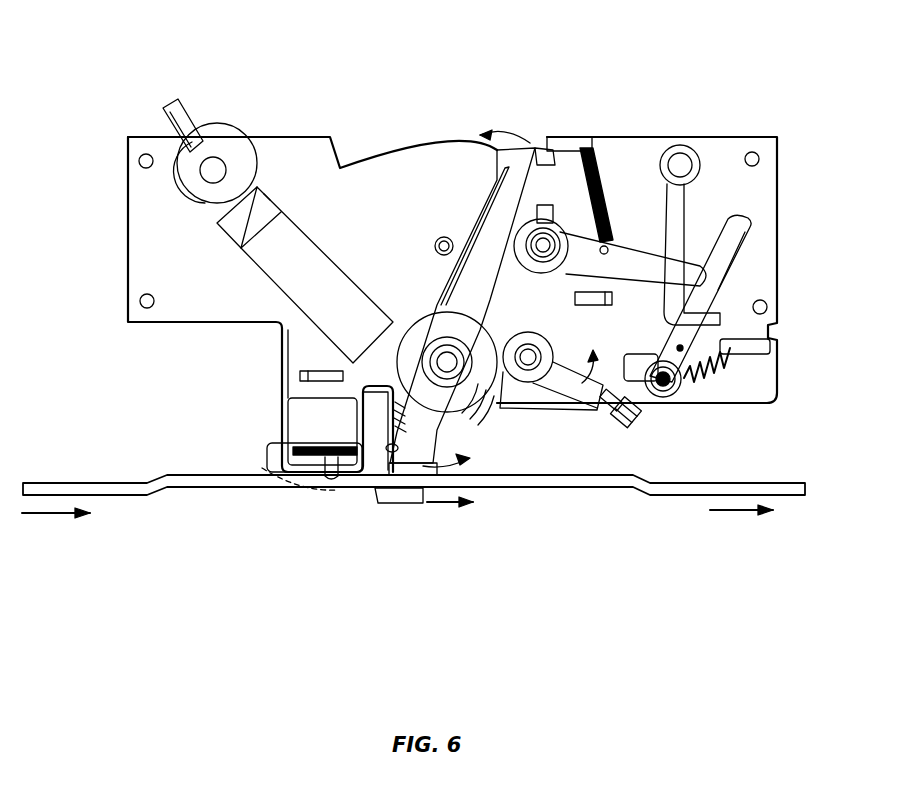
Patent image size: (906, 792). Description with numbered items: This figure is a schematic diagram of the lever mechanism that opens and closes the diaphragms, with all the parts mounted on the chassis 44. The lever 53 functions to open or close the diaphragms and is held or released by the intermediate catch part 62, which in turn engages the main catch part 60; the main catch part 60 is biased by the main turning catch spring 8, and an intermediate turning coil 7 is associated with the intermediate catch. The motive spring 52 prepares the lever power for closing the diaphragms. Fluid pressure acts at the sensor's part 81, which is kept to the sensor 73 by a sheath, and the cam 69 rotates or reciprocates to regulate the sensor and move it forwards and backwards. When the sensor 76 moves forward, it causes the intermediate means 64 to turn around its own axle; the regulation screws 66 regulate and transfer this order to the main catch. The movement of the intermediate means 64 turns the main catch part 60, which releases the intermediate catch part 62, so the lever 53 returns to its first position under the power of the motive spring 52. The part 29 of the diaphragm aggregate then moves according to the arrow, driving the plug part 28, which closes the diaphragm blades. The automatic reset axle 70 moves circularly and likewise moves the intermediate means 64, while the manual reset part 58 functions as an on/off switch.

The intermediate turning coil 7 is at (585, 148).
The main turning catch spring 8 is at (740, 353).
The plug part 28 is at (508, 482).
The part for transferring lever's movement to the diaphragms 29 is at (402, 494).
The chassis 44 is at (420, 177).
The motive spring 52 is at (497, 181).
The lever 53 is at (540, 158).
The manual reset part 58 is at (678, 164).
The main catch part 60 is at (690, 388).
The intermediate catch part 62 is at (638, 263).
The intermediate means 64 is at (583, 397).
The regulation screws 66 is at (617, 421).
The cam 69 is at (193, 127).
The automatic reset axle 70 is at (302, 450).
The sensor 73 is at (300, 252).
The sensor 76 is at (383, 352).
The sensor's part 81 is at (245, 213).